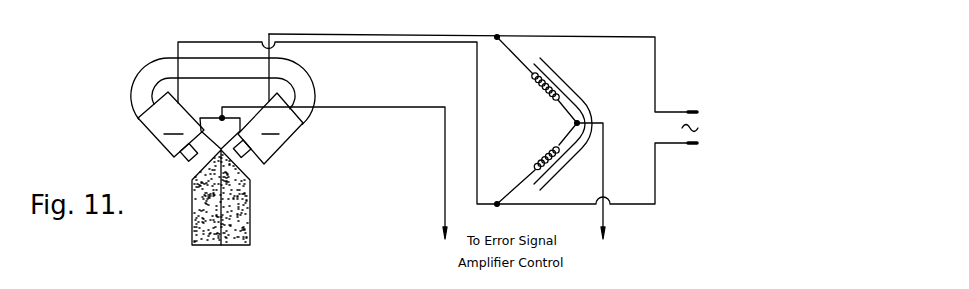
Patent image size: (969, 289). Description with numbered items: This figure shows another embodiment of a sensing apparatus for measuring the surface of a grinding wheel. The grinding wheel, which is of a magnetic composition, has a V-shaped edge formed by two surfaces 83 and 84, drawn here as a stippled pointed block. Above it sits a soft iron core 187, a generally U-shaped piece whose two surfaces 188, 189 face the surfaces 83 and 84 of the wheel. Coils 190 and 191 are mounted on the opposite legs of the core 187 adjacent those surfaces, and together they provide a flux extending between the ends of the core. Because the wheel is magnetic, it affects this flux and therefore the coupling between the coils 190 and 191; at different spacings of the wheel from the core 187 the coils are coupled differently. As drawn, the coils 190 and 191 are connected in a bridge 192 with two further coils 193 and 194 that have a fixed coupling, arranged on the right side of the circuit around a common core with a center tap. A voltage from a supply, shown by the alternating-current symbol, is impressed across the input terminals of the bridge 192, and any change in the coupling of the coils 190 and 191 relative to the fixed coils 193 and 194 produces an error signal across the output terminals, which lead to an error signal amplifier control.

The grinding wheel surface 83 is at (192, 187).
The grinding wheel surface 84 is at (250, 211).
The soft iron core 187 is at (300, 90).
The core surface 188 is at (195, 168).
The core surface 189 is at (245, 170).
The coil 190 is at (150, 132).
The coil 191 is at (288, 129).
The bridge 192 is at (551, 124).
The coil 193 is at (531, 76).
The coil 194 is at (533, 158).